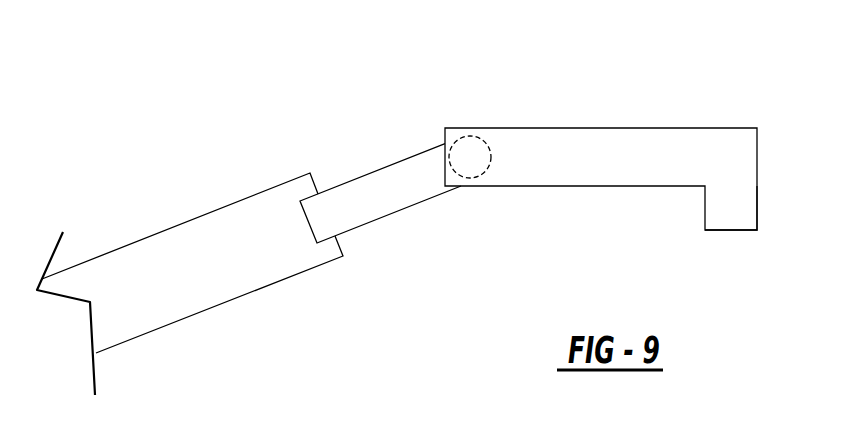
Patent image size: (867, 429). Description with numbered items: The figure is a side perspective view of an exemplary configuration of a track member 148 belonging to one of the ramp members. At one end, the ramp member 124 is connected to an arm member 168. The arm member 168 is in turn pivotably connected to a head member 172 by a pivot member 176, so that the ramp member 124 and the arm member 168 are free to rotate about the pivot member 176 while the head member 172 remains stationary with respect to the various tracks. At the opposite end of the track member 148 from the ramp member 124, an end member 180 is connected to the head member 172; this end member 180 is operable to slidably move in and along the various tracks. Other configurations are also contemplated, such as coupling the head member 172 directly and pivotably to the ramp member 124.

The ramp member 124 is at (215, 310).
The track member 148 is at (700, 77).
The arm member 168 is at (378, 168).
The head member 172 is at (482, 128).
The pivot member 176 is at (492, 153).
The end member 180 is at (757, 230).